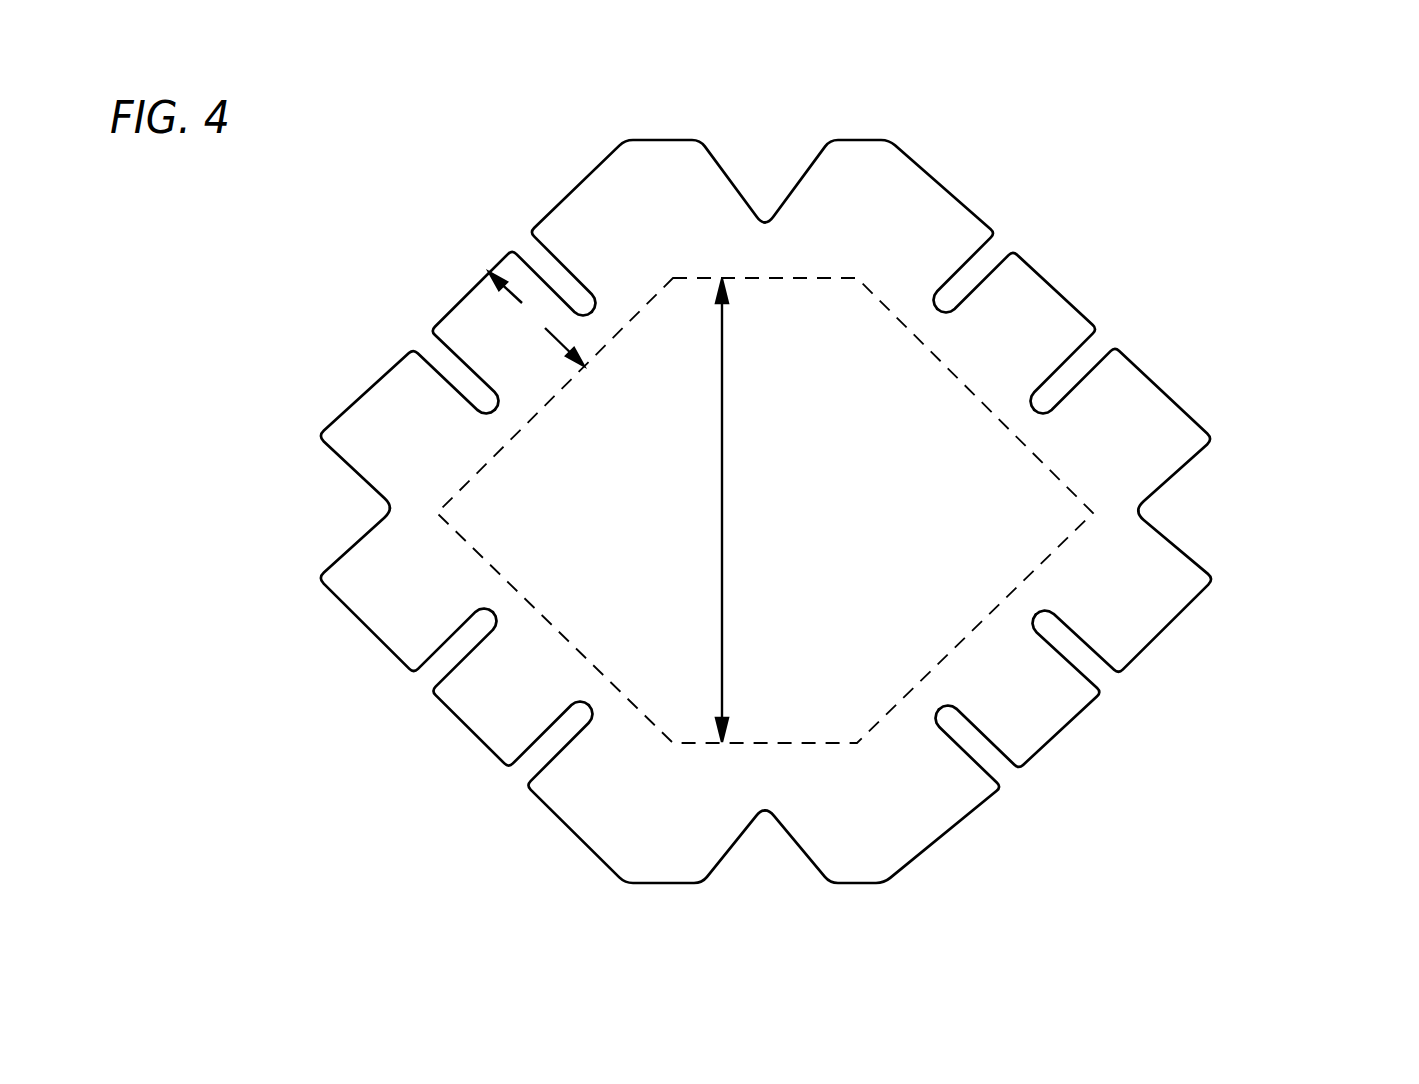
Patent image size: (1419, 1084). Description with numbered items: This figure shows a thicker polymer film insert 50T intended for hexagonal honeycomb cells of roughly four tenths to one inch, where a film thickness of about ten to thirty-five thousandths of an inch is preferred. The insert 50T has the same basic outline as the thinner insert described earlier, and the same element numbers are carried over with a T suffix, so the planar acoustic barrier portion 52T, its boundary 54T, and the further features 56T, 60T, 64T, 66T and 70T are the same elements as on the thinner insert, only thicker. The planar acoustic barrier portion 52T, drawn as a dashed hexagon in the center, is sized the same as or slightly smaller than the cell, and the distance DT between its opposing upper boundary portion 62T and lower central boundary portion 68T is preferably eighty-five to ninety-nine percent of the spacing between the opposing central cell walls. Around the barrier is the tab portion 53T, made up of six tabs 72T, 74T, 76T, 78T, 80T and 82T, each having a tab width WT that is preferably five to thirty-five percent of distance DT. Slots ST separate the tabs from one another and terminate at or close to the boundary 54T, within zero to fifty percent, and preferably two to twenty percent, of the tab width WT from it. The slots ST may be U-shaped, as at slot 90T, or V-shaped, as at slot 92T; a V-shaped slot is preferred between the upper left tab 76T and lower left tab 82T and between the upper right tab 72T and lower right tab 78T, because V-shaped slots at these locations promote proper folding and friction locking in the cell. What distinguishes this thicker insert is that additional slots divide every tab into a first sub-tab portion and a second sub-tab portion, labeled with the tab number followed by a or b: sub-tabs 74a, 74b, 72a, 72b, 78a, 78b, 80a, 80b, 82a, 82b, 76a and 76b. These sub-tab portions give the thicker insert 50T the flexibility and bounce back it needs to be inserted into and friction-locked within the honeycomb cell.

The insert 50T is at (1220, 184).
The planar acoustic barrier portion 52T is at (765, 510).
The tab portion 53T is at (602, 694).
The boundary of the planar acoustic portion 54T is at (1075, 492).
The tab side surface 56T is at (543, 517).
The tab side surface 60T is at (991, 406).
The upper boundary portion 62T is at (787, 278).
The tab side surface 64T is at (500, 446).
The tab side surface 66T is at (940, 665).
The lower central boundary portion 68T is at (747, 743).
The tab side surface 70T is at (538, 612).
The upper right tab 72T is at (1060, 284).
The tab 74T is at (583, 176).
The upper left tab 76T is at (358, 396).
The lower right tab 78T is at (1153, 643).
The tab 80T is at (937, 843).
The lower left tab 82T is at (364, 632).
The U-shaped slot 90T is at (1007, 248).
The V-shaped slot 92T is at (352, 508).
The slot ST is at (528, 248).
The tab width WT is at (536, 319).
The distance between upper and lower boundary portions DT is at (721, 510).
The first sub-tab portion 74a is at (648, 226).
The second sub-tab portion 74b is at (879, 224).
The first sub-tab portion 72a is at (1016, 331).
The second sub-tab portion 72b is at (1122, 430).
The first sub-tab portion 78a is at (1019, 691).
The second sub-tab portion 78b is at (1123, 591).
The first sub-tab portion 80a is at (646, 794).
The second sub-tab portion 80b is at (882, 796).
The first sub-tab portion 82a is at (407, 589).
The second sub-tab portion 82b is at (510, 688).
The first sub-tab portion 76a is at (408, 429).
The second sub-tab portion 76b is at (512, 331).